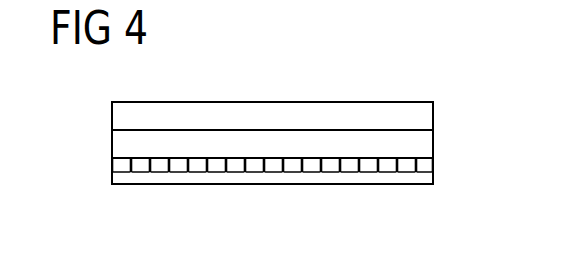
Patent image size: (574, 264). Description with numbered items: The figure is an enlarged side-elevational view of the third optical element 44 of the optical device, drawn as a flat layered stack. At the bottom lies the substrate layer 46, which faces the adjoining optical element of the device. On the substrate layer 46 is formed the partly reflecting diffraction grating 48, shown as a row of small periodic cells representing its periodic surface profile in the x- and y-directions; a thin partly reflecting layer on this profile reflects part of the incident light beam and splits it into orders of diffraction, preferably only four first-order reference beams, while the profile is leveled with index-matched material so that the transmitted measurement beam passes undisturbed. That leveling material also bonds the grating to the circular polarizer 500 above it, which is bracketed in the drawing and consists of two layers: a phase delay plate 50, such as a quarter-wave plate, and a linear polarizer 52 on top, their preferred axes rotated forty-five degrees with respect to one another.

The third optical element 44 is at (407, 72).
The substrate layer 46 is at (120, 178).
The partly reflecting diffraction grating 48 is at (181, 170).
The phase delay plate 50 is at (120, 145).
The linear polarizer 52 is at (120, 112).
The circular polarizer 500 is at (443, 103).